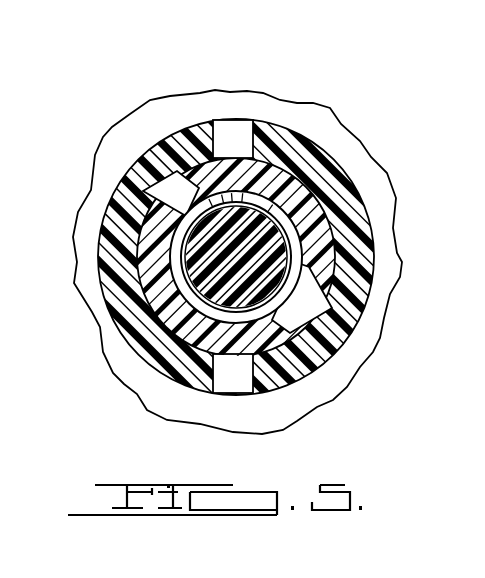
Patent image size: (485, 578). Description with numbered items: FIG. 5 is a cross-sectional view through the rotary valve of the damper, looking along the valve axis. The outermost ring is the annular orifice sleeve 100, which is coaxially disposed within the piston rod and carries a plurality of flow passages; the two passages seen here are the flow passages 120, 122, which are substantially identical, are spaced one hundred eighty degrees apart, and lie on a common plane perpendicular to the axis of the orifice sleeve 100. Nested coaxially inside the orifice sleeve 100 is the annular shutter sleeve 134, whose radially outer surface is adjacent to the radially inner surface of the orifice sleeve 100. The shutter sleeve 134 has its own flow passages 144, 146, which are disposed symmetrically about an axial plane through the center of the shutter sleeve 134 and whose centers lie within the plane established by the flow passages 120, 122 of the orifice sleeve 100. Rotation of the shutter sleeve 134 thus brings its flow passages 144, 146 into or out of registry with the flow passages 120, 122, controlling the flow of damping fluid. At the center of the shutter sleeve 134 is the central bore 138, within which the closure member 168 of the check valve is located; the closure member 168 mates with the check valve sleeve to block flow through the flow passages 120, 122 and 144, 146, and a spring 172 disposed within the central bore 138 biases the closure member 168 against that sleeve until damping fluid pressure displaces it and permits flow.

The orifice sleeve 100 is at (148, 330).
The flow passage 120 is at (242, 385).
The flow passage 122 is at (233, 130).
The shutter sleeve 134 is at (150, 272).
The central bore 138 is at (277, 190).
The flow passage 144 is at (302, 310).
The flow passage 146 is at (167, 204).
The closure member 168 is at (183, 307).
The spring 172 is at (273, 213).